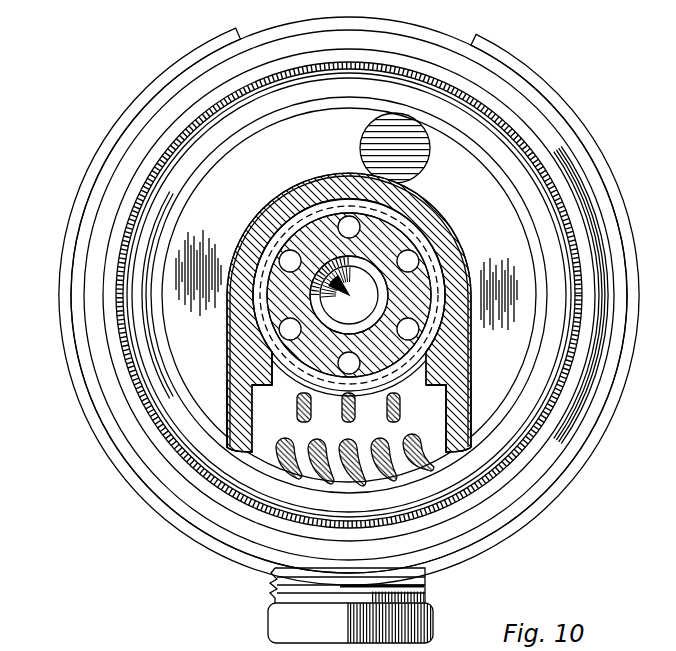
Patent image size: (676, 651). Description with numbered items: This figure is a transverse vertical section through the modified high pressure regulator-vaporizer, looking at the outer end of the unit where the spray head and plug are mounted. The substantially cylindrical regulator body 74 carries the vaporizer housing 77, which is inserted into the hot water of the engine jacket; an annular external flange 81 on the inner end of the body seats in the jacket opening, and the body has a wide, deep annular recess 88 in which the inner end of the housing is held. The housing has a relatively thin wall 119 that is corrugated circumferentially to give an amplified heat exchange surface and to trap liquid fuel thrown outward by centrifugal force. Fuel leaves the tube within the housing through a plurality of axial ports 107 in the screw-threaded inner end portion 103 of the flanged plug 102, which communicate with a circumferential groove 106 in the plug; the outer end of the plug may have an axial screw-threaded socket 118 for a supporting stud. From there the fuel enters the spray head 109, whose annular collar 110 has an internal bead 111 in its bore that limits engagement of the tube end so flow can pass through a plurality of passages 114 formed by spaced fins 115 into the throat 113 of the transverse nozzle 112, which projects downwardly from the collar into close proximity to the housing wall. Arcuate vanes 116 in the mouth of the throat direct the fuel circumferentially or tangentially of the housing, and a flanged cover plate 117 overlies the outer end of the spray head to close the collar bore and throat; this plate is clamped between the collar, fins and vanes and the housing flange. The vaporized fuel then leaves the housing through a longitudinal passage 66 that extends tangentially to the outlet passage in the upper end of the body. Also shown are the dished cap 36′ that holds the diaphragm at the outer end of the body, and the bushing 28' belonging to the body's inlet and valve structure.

The dished cap 36′ is at (168, 68).
The regulator body 74 is at (619, 303).
The external flange 81 is at (110, 197).
The housing wall 119 is at (569, 386).
The vaporizer housing 77 is at (117, 272).
The annular recess 88 is at (194, 376).
The longitudinal passage 66 is at (367, 136).
The cover plate 117 is at (280, 203).
The annular collar 110 is at (228, 333).
The transverse nozzle 112 is at (226, 396).
The throat 113 is at (437, 406).
The passages 114 is at (274, 384).
The spray head 109 is at (452, 246).
The circumferential groove 106 is at (313, 216).
The internal bead 111 is at (408, 220).
The screw-threaded inner end portion 103 is at (332, 210).
The flanged plug 102 is at (388, 250).
The screw-threaded socket 118 is at (380, 294).
The axial ports 107 is at (345, 378).
The fins 115 is at (390, 407).
The arcuate vanes 116 is at (358, 446).
The bushing 28' is at (326, 605).